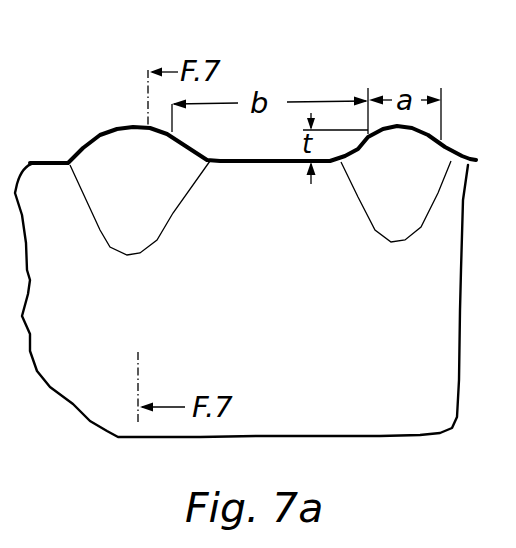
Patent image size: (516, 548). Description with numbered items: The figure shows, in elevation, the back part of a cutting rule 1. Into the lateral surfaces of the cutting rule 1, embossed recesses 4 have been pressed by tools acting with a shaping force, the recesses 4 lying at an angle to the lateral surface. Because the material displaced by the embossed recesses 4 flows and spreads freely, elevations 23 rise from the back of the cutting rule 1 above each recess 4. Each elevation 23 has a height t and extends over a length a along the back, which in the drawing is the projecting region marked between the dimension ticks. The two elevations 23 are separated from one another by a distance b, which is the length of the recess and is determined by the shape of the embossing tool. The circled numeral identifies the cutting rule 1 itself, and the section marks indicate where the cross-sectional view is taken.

The cutting rule 1 is at (241, 300).
The elevations 23 is at (127, 123).
The embossed recesses 4 is at (116, 178).